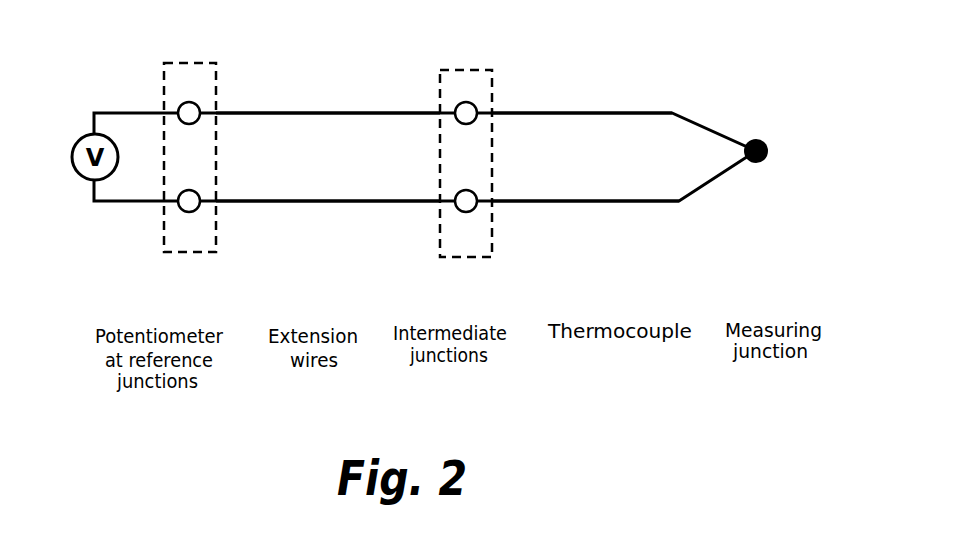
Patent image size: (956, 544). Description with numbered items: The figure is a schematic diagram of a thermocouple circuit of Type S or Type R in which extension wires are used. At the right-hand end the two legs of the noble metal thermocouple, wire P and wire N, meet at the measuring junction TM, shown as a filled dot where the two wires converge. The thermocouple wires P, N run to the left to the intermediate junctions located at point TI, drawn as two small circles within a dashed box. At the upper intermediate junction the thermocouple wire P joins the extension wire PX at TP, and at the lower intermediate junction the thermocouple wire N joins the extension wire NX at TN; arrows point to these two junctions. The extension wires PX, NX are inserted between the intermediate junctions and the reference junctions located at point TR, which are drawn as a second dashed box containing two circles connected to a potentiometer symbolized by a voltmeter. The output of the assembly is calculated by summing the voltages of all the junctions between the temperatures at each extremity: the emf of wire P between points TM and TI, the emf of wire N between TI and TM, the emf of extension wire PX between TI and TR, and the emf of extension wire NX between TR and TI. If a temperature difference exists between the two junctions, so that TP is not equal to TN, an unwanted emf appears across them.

The measuring junction TM is at (760, 228).
The reference junctions TR is at (190, 187).
The intermediate junctions TI is at (466, 191).
The junction where P joins PX TP is at (484, 83).
The junction where N joins NX TN is at (489, 221).
The extension wire PX is at (328, 95).
The extension wire NX is at (328, 226).
The thermocouple wire P is at (582, 94).
The thermocouple wire N is at (585, 225).